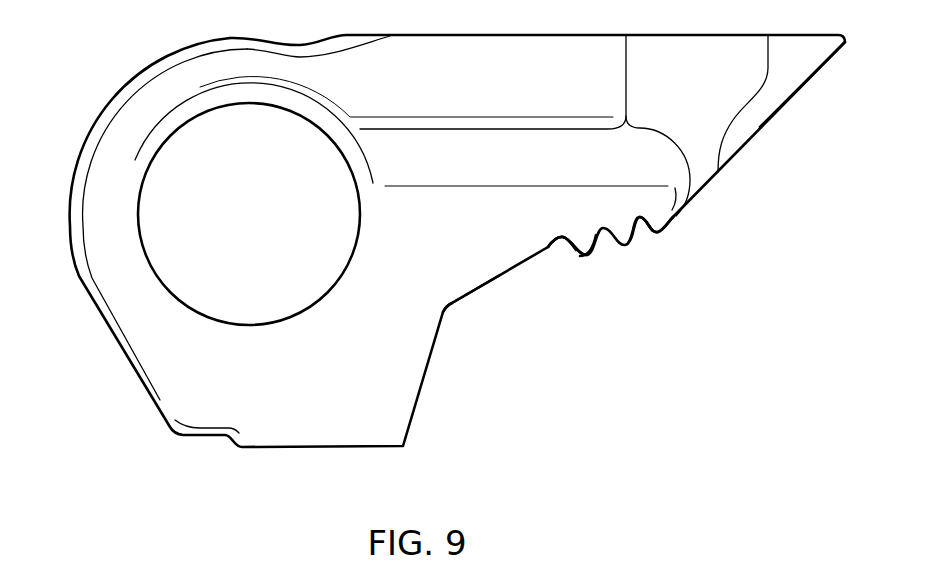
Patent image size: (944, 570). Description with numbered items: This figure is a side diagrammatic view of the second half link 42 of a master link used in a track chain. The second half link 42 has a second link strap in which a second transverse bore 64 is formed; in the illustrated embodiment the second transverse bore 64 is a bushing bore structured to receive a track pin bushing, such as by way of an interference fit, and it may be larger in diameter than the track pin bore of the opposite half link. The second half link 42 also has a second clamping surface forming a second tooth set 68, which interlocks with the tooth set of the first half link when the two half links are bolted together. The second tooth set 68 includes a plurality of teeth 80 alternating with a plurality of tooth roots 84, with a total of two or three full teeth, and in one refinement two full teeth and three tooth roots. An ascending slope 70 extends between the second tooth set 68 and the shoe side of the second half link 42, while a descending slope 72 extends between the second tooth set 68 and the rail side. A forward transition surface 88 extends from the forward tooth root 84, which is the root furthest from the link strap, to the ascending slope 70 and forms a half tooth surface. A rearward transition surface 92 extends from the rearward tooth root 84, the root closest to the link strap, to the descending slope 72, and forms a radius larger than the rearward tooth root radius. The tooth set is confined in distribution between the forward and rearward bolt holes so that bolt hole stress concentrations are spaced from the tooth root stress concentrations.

The second half link 42 is at (162, 373).
The second transverse bore 64 is at (140, 242).
The second tooth set 68 is at (623, 262).
The ascending slope 70 is at (766, 124).
The descending slope 72 is at (450, 308).
The teeth 80 is at (587, 256).
The tooth roots 84 is at (556, 243).
The forward transition surface 88 is at (650, 232).
The rearward transition surface 92 is at (550, 250).